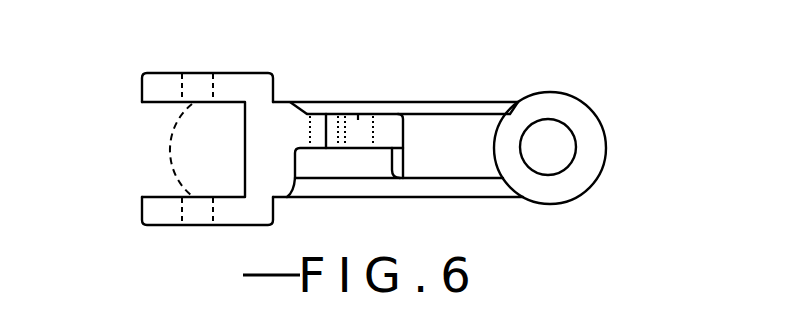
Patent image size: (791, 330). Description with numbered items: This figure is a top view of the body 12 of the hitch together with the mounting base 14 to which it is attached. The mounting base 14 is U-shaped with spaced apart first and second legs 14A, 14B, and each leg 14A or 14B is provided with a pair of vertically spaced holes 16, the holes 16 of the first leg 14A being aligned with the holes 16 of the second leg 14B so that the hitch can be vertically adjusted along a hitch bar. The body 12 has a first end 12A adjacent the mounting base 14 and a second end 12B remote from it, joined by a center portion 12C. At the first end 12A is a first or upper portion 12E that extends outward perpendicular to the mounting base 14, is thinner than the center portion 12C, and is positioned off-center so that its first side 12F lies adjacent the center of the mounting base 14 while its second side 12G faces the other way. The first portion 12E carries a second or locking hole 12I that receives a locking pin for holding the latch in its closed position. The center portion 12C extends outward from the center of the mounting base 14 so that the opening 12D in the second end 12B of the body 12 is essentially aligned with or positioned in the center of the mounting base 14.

The body 12 is at (464, 197).
The first end of the body 12A is at (303, 191).
The second end of the body 12B is at (605, 146).
The center portion of the body 12C is at (480, 102).
The opening 12D is at (560, 160).
The first portion 12E is at (402, 118).
The first side of the first portion 12F is at (356, 150).
The second side of the first portion 12G is at (382, 104).
The second or locking hole 12I is at (357, 98).
The mounting base 14 is at (248, 75).
The first leg 14A is at (158, 225).
The second leg 14B is at (162, 73).
The holes 16 is at (175, 150).